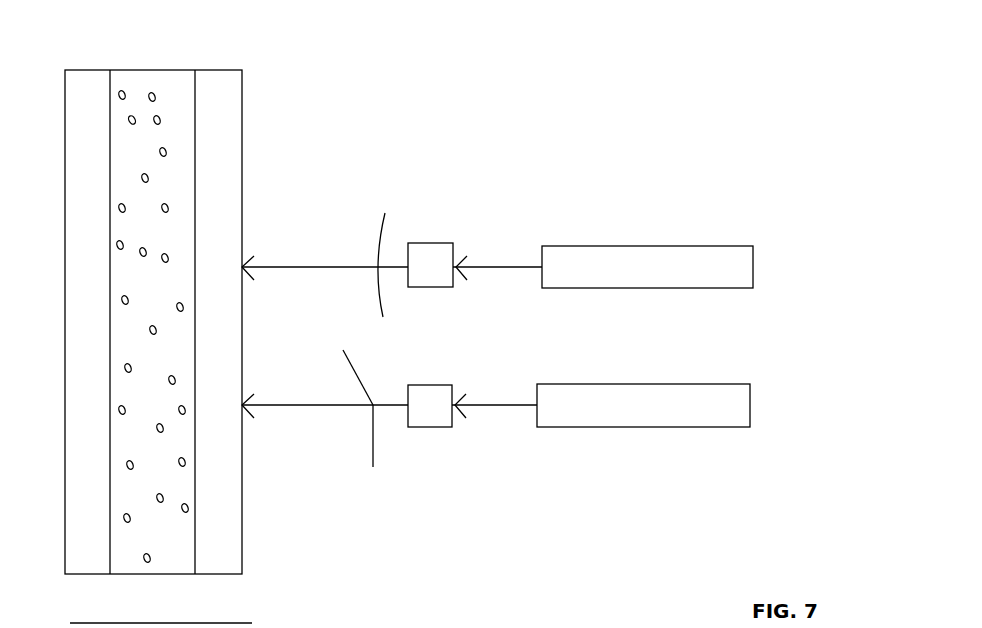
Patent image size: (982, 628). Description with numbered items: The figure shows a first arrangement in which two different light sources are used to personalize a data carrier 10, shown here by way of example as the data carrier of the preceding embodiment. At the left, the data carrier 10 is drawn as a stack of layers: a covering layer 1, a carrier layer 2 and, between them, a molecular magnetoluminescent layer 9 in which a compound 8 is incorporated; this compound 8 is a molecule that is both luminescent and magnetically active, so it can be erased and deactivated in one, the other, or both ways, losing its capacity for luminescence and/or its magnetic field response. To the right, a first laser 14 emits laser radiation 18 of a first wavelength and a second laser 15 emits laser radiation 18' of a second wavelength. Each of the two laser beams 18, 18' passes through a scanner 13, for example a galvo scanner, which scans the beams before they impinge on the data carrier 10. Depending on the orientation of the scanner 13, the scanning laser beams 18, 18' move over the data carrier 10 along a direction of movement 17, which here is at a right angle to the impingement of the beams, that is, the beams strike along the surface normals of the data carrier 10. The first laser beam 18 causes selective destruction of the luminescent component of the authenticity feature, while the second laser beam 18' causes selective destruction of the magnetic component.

The covering layer 1 is at (222, 122).
The carrier layer 2 is at (88, 130).
The compound 8 is at (152, 95).
The molecular magnetoluminescent layer 9 is at (140, 90).
The data carrier 10 is at (253, 579).
The scanner 13 is at (420, 275).
The first laser 14 is at (635, 275).
The second laser 15 is at (627, 405).
The direction of movement of the scanning laser beam 17 is at (364, 339).
The laser beam 18 is at (392, 231).
The laser beam 18' is at (389, 445).